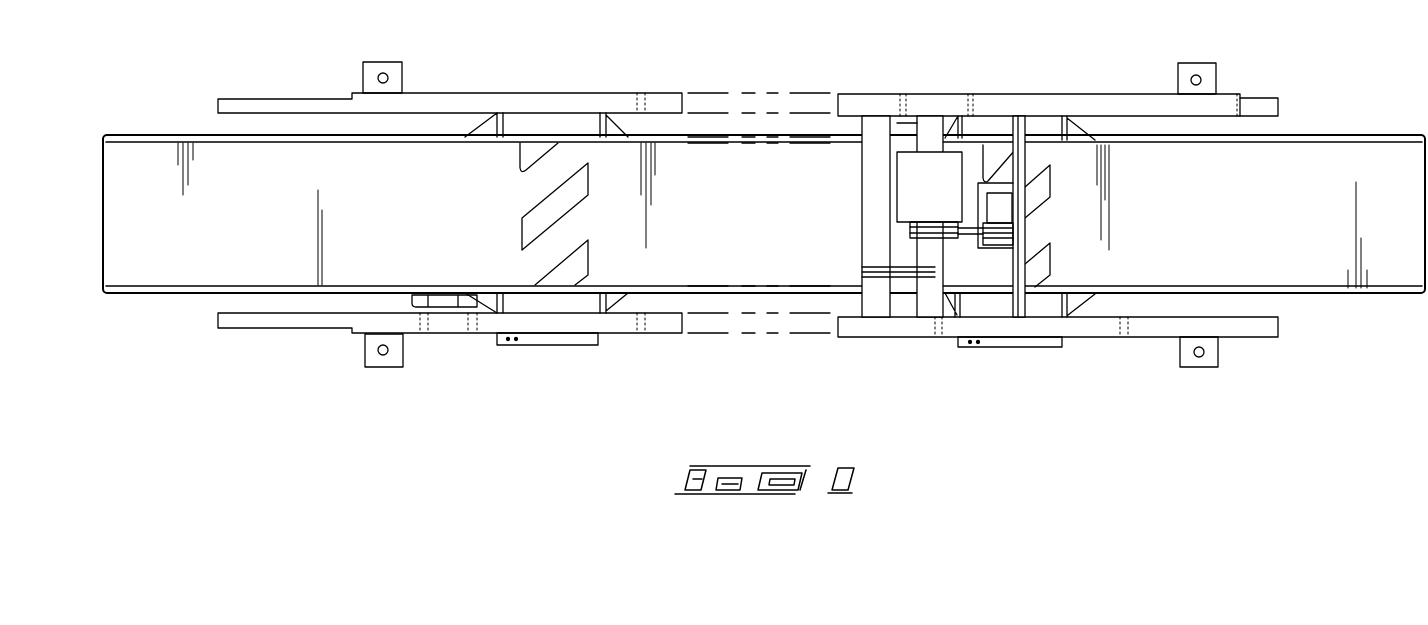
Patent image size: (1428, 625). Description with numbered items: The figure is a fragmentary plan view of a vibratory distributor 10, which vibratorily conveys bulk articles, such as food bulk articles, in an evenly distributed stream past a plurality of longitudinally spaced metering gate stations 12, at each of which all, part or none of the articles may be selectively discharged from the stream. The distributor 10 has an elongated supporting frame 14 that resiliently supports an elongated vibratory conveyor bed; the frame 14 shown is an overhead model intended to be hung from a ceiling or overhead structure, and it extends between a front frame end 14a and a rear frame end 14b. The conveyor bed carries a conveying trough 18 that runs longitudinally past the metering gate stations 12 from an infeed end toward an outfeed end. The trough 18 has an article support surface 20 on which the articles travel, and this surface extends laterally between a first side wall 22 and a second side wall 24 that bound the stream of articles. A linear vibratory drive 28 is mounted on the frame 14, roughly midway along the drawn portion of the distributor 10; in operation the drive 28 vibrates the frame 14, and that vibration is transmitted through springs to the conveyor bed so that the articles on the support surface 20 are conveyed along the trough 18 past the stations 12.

The vibratory distributor 10 is at (976, 38).
The metering gate station 12 is at (577, 368).
The supporting frame 14 is at (1138, 108).
The front frame end 14a is at (468, 104).
The rear frame end 14b is at (1263, 100).
The conveying trough 18 is at (207, 282).
The article support surface 20 is at (258, 224).
The side wall 22 is at (453, 145).
The side wall 24 is at (378, 283).
The linear vibratory drive 28 is at (922, 171).